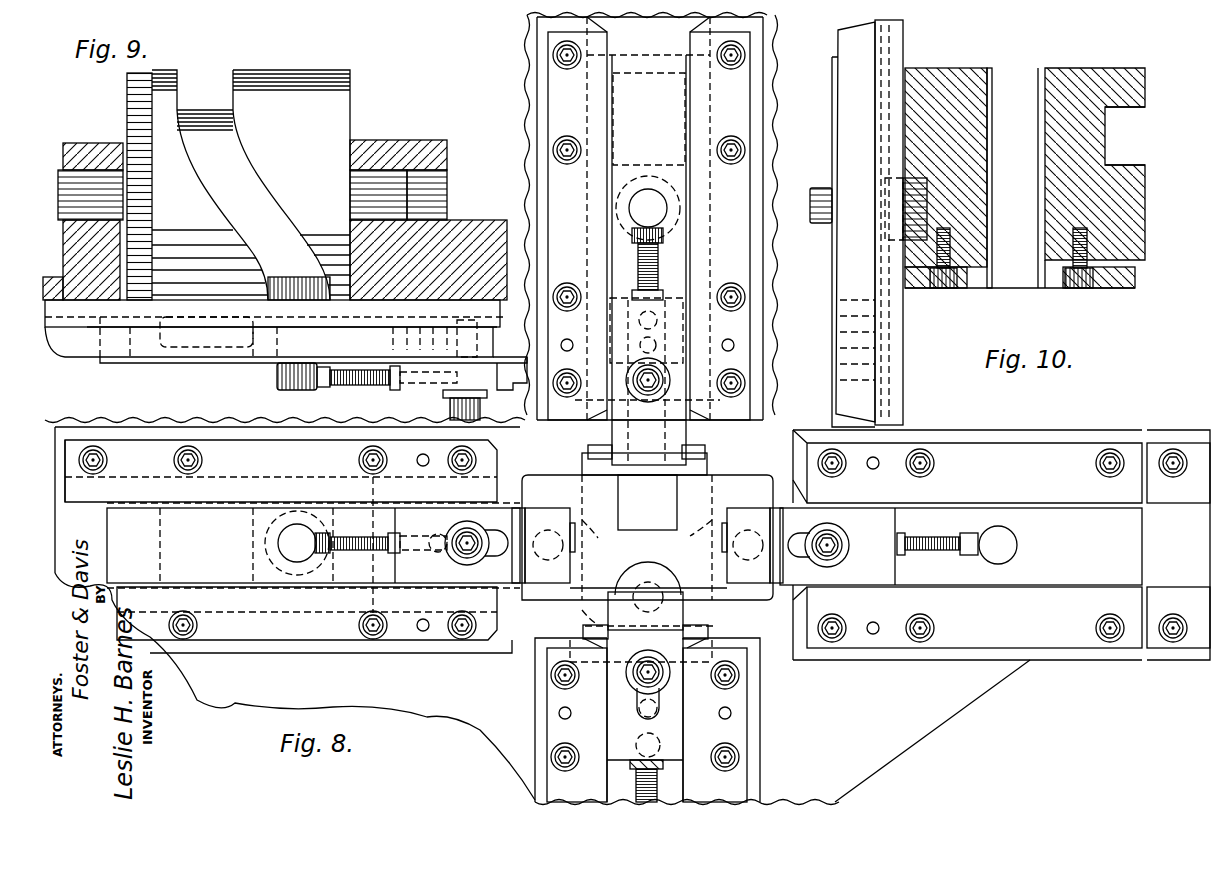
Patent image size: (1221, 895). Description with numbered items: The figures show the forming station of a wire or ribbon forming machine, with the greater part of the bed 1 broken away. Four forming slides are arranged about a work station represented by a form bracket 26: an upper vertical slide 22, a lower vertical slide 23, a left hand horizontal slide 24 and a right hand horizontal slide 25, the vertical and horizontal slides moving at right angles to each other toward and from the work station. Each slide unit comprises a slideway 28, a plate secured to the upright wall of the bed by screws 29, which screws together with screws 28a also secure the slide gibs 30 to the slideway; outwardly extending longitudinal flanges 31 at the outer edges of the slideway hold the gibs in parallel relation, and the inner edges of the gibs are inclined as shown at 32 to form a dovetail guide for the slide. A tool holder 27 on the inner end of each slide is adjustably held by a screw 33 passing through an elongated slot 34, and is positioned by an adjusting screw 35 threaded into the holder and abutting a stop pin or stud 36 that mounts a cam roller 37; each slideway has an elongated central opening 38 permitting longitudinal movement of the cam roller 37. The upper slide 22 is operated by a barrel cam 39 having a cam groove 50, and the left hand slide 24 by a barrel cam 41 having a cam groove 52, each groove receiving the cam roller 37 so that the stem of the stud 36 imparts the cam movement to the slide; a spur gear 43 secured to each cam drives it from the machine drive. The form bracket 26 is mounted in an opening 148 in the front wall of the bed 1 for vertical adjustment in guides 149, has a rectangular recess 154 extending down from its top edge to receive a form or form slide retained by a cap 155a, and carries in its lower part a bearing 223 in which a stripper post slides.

In FIG. 9, the bed 1 is at (455, 222).
In FIG. 8, the bed 1 is at (459, 738).
In FIG. 10, the upper vertical forming slide 22 is at (832, 270).
In FIG. 8, the upper vertical forming slide 22 is at (672, 127).
In FIG. 8, the lower vertical forming slide 23 is at (665, 785).
In FIG. 9, the left hand horizontal slide 24 is at (258, 366).
In FIG. 8, the left hand horizontal slide 24 is at (228, 579).
In FIG. 8, the right hand horizontal slide 25 is at (1028, 579).
In FIG. 8, the form bracket 26 is at (738, 492).
In FIG. 9, the tool holder 27 is at (496, 393).
In FIG. 8, the tool holder 27 is at (540, 514).
In FIG. 9, the slideway 28 is at (70, 358).
In FIG. 10, the slideway 28 is at (895, 362).
In FIG. 8, the slideway 28 is at (405, 656).
In FIG. 8, the screws 28a is at (200, 464).
In FIG. 8, the screws 29 is at (733, 70).
In FIG. 9, the slide gib 30 is at (150, 360).
In FIG. 10, the slide gib 30 is at (850, 292).
In FIG. 8, the slide gib 30 is at (560, 115).
In FIG. 8, the longitudinal flange 31 is at (213, 428).
In FIG. 8, the inclined edge 32 is at (69, 500).
In FIG. 9, the screw 33 is at (450, 408).
In FIG. 8, the screw 33 is at (668, 380).
In FIG. 8, the elongated slot 34 is at (493, 557).
In FIG. 9, the adjusting screw 35 is at (345, 388).
In FIG. 8, the adjusting screw 35 is at (653, 275).
In FIG. 9, the stop pin or stud 36 is at (297, 392).
In FIG. 10, the stop pin or stud 36 is at (822, 226).
In FIG. 8, the stop pin or stud 36 is at (633, 208).
In FIG. 9, the cam roller 37 is at (292, 296).
In FIG. 10, the cam roller 37 is at (910, 206).
In FIG. 8, the cam roller 37 is at (648, 177).
In FIG. 8, the elongated central opening 38 is at (240, 477).
In FIG. 10, the barrel cam 39 is at (1135, 230).
In FIG. 9, the barrel cam 41 is at (338, 120).
In FIG. 9, the spur gear 43 is at (148, 200).
In FIG. 10, the spur gear 43 is at (1115, 290).
In FIG. 10, the cam groove 50 is at (1128, 142).
In FIG. 9, the cam groove 52 is at (208, 78).
In FIG. 8, the opening 148 is at (712, 457).
In FIG. 8, the guides 149 is at (646, 561).
In FIG. 8, the rectangular recess 154 is at (624, 519).
In FIG. 8, the cap 155a is at (600, 468).
In FIG. 8, the bearing 223 is at (650, 590).